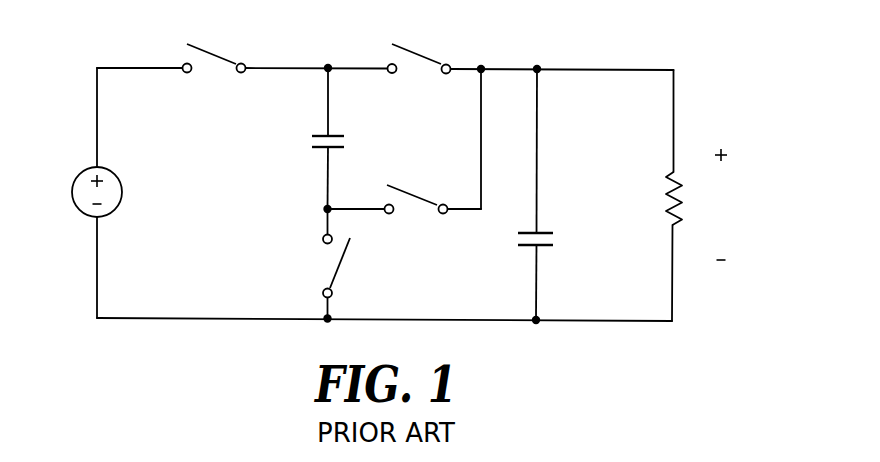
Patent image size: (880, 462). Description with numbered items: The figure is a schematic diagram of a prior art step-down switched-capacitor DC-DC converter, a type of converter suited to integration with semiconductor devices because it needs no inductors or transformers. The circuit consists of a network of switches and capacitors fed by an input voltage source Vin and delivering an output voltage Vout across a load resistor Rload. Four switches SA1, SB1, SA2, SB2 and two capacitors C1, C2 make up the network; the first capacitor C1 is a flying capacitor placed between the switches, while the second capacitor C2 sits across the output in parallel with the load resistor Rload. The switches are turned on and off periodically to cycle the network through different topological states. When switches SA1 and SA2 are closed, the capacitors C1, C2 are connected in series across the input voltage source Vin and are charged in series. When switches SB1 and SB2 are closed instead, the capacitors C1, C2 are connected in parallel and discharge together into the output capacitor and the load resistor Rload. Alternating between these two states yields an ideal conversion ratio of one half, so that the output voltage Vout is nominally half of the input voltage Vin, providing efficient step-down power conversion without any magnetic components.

The input voltage source Vin is at (79, 192).
The switch SA1 is at (214, 40).
The switch SB1 is at (419, 41).
The switch SA2 is at (416, 183).
The switch SB2 is at (314, 264).
The capacitor C1 is at (310, 138).
The capacitor C2 is at (553, 194).
The load resistor Rload is at (639, 198).
The output voltage Vout is at (718, 204).